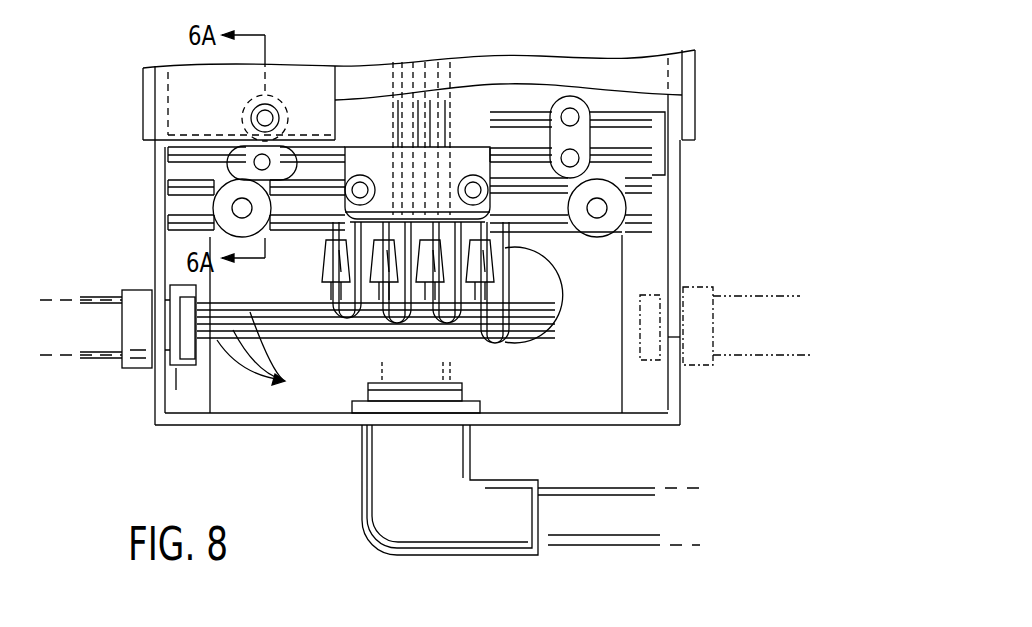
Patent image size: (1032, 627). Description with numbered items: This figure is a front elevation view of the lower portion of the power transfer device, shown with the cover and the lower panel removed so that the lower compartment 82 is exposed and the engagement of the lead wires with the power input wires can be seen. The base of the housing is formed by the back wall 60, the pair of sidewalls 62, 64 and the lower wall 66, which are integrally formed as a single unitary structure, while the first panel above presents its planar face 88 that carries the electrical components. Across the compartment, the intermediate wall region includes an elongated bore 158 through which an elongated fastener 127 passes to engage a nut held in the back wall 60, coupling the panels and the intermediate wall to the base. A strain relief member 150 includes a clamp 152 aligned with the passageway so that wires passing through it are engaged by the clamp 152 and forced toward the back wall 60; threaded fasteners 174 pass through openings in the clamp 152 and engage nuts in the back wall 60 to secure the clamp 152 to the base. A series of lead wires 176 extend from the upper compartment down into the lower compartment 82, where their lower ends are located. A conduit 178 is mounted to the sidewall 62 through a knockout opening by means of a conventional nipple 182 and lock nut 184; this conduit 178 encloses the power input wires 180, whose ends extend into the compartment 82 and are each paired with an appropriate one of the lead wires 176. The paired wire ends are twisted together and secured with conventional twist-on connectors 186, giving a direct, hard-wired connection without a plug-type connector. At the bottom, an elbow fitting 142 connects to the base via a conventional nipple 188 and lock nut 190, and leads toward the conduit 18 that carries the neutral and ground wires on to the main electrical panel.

The sidewall 62 is at (157, 243).
The planar face 88 is at (652, 72).
The sidewall 64 is at (676, 264).
The back wall 60 is at (588, 398).
The lower wall 66 is at (325, 417).
The lower compartment 82 is at (250, 395).
The elongated fastener 127 is at (266, 112).
The clamp 152 is at (361, 178).
The strain relief member 150 is at (473, 178).
The threaded fastener 174 is at (474, 180).
The elongated bore 158 is at (260, 156).
The conduit 178 is at (105, 305).
The nipple 182 is at (185, 297).
The lock nut 184 is at (177, 368).
The power input wires 180 is at (376, 350).
The twist-on connector 186 is at (377, 268).
The lead wires 176 is at (510, 260).
The nipple 188 is at (388, 390).
The lock nut 190 is at (478, 400).
The elbow fitting 142 is at (455, 525).
The conduit 18 is at (583, 523).